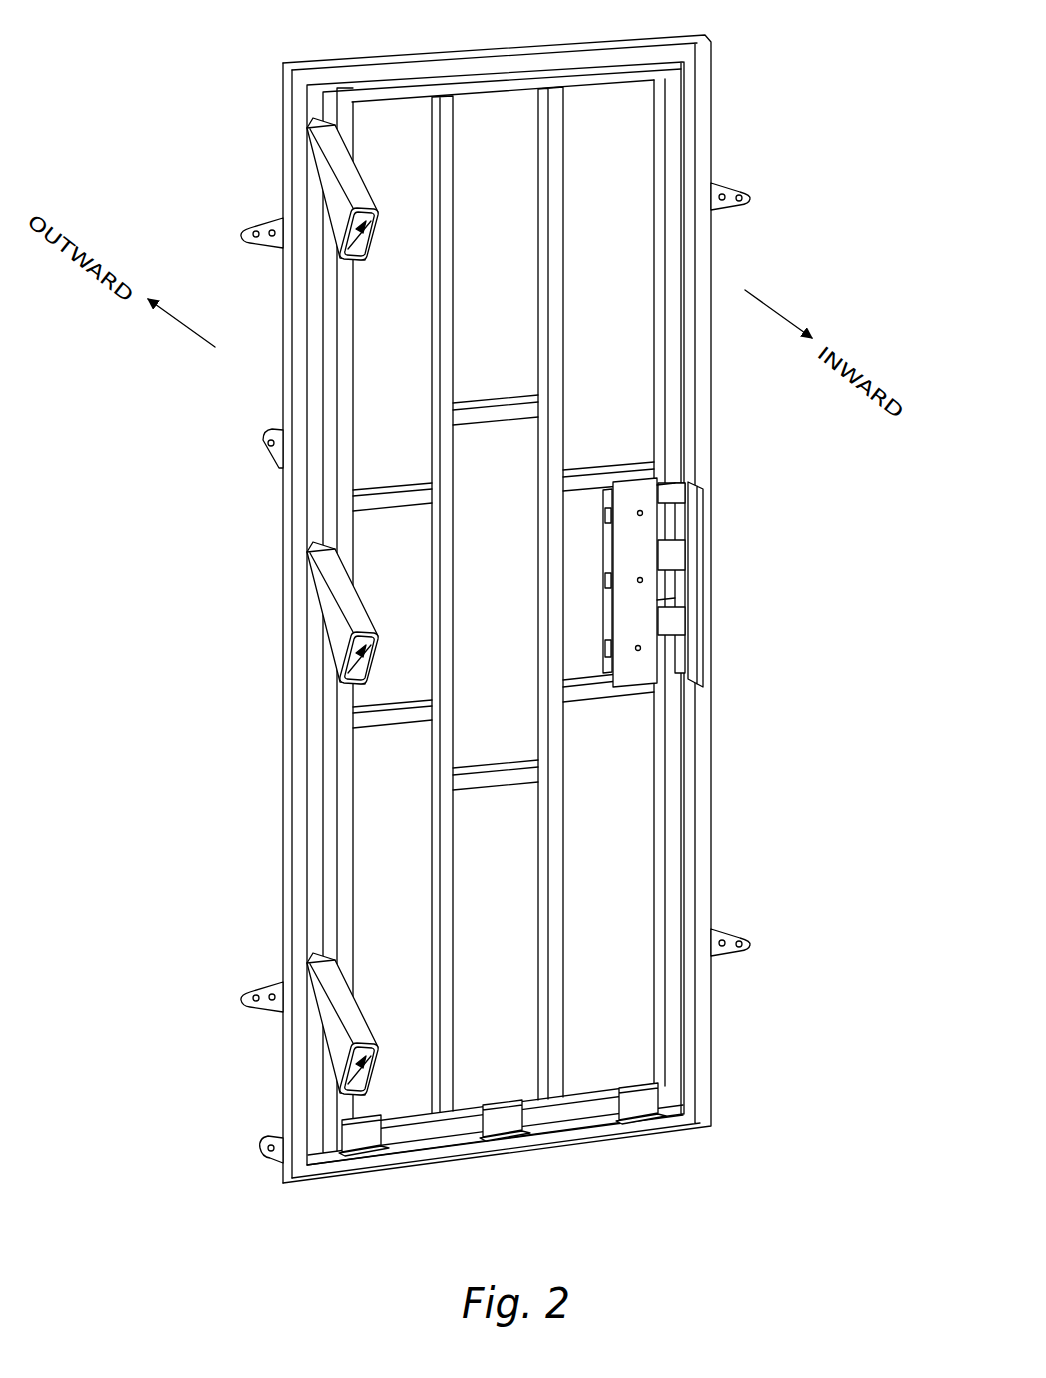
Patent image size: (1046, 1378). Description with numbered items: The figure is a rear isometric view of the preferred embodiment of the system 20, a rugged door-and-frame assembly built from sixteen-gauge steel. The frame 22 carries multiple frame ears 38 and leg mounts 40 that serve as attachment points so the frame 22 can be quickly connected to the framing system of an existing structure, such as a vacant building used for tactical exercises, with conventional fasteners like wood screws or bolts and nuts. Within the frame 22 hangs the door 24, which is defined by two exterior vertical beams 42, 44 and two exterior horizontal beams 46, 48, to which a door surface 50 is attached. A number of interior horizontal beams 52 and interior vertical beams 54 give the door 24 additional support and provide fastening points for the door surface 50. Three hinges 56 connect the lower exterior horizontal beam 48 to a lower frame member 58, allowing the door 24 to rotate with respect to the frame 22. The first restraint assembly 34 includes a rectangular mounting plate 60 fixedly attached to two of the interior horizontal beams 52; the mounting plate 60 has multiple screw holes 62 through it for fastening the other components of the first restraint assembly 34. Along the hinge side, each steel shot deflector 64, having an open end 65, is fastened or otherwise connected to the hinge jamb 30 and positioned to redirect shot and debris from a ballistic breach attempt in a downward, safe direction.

The system 20 is at (155, 97).
The frame 22 is at (332, 63).
The door 24 is at (618, 943).
The hinge jamb 30 is at (288, 740).
The first restraint assembly 34 is at (705, 468).
The frame ears 38 is at (268, 246).
The leg mounts 40 is at (272, 458).
The exterior vertical beam 42 is at (658, 305).
The exterior vertical beam 44 is at (342, 842).
The exterior horizontal beam 46 is at (470, 87).
The lower exterior horizontal beam 48 is at (463, 1123).
The door surface 50 is at (502, 605).
The interior horizontal beams 52 is at (650, 467).
The interior vertical beams 54 is at (555, 182).
The hinges 56 is at (363, 1137).
The lower frame member 58 is at (463, 1152).
The rectangular mounting plate 60 is at (640, 487).
The screw holes 62 is at (638, 516).
The steel shot deflector 64 is at (358, 198).
The open end 65 is at (373, 242).